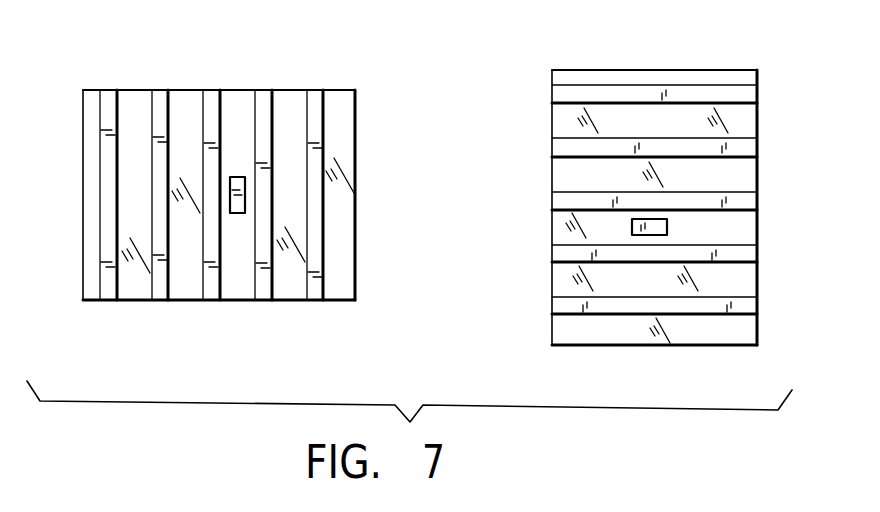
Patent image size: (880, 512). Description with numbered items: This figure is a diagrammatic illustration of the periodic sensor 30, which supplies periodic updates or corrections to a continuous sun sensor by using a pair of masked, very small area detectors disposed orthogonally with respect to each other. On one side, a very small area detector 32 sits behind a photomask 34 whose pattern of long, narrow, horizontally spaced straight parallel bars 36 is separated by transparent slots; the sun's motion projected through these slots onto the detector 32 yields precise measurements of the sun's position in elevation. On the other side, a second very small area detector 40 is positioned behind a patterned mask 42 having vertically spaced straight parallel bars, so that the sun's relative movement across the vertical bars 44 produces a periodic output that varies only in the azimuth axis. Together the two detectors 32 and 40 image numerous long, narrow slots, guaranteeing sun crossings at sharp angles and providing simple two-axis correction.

The periodic sensor 30 is at (443, 100).
The very small area detector 32 is at (668, 232).
The photomask 34 is at (743, 287).
The straight parallel bars 36 is at (748, 98).
The very small area detector 40 is at (237, 213).
The patterned mask 42 is at (82, 248).
The vertical bars 44 is at (158, 90).